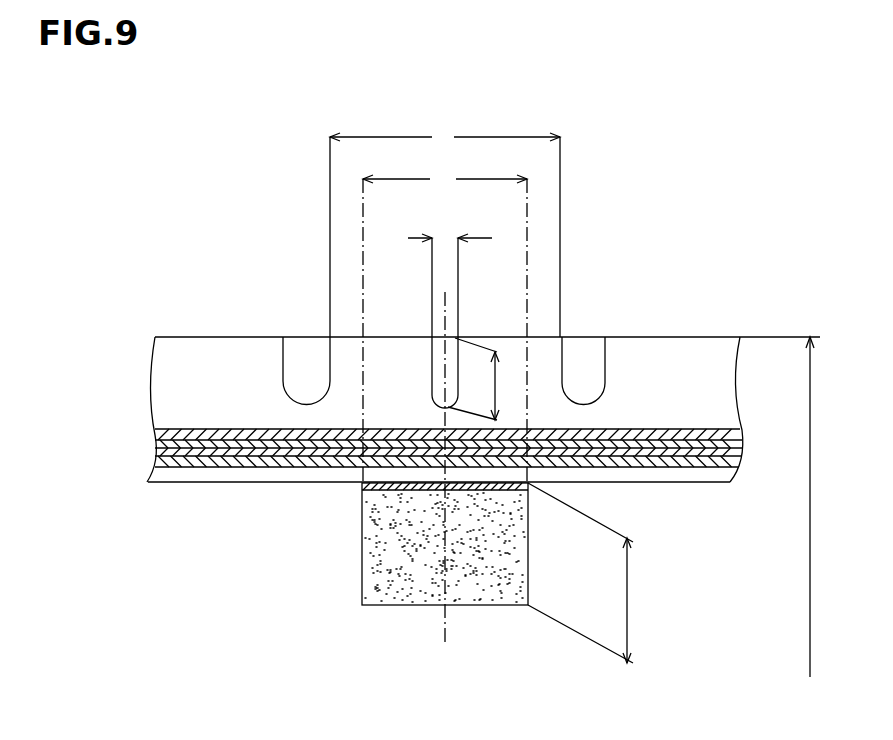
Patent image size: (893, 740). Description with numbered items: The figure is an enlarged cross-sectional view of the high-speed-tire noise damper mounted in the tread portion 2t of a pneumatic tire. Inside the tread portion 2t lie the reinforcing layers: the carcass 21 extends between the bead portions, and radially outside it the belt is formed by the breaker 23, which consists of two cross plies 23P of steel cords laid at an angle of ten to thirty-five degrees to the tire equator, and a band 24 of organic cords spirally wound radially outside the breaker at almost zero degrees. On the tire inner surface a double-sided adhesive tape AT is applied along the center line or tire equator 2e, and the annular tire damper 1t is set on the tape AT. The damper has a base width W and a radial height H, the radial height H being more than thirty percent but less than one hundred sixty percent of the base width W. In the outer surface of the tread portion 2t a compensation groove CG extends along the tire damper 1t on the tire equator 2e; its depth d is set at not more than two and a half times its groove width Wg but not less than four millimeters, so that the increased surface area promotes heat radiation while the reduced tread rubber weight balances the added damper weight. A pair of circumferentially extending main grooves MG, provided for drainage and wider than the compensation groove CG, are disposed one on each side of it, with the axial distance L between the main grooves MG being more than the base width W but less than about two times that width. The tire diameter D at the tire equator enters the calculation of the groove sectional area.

The tread portion 2t is at (673, 363).
The main grooves MG is at (302, 353).
The compensation groove CG is at (437, 370).
The band 24 is at (192, 430).
The cross plies 23P is at (163, 440).
The breaker 23 is at (36, 407).
The carcass 21 is at (168, 471).
The double-sided adhesive tape AT is at (395, 489).
The annular tire damper 1t is at (385, 573).
The tire equator 2e is at (446, 620).
The axial distance between main grooves L is at (445, 231).
The base width W is at (445, 325).
The groove width Wg is at (450, 228).
The depth of compensation groove d is at (480, 379).
The radial height H is at (581, 573).
The tire diameter D is at (810, 520).